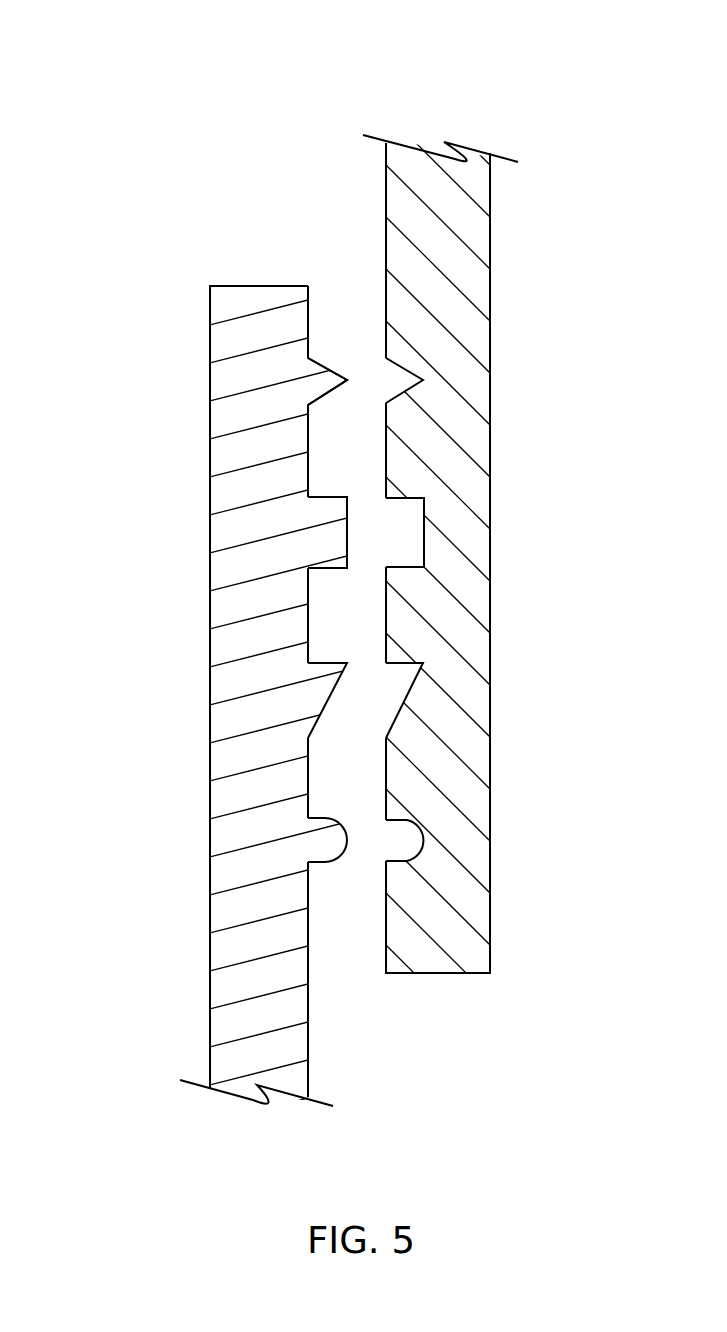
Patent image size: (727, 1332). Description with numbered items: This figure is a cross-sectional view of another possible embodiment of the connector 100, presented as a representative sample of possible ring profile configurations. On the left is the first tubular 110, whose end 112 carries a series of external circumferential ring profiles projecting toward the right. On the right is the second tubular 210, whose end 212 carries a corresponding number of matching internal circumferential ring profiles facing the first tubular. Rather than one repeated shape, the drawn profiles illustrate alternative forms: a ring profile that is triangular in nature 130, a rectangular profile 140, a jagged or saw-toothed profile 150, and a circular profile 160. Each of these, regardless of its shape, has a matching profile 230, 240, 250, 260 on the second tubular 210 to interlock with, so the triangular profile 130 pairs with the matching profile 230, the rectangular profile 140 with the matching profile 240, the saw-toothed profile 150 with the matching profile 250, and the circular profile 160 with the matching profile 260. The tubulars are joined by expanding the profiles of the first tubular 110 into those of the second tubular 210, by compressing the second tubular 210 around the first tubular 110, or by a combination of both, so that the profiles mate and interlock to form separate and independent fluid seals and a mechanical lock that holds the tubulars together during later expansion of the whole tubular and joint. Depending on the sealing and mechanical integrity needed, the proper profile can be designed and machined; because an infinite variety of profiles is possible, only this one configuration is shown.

The connector 100 is at (84, 39).
The first tubular 110 is at (257, 457).
The end of first tubular 112 is at (250, 285).
The triangular ring profile 130 is at (347, 380).
The rectangular ring profile 140 is at (347, 538).
The jagged or saw-toothed ring profile 150 is at (347, 664).
The circular ring profile 160 is at (347, 842).
The second tubular 210 is at (453, 245).
The end of second tubular 212 is at (447, 973).
The matching profile for triangular ring profile 230 is at (423, 380).
The matching profile for rectangular ring profile 240 is at (424, 538).
The matching profile for saw-toothed ring profile 250 is at (418, 684).
The matching profile for circular ring profile 260 is at (425, 843).